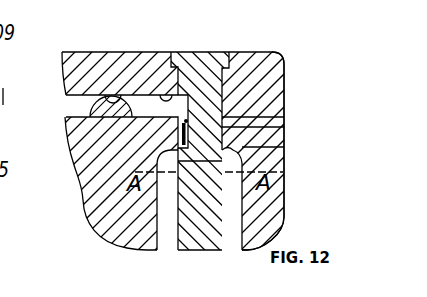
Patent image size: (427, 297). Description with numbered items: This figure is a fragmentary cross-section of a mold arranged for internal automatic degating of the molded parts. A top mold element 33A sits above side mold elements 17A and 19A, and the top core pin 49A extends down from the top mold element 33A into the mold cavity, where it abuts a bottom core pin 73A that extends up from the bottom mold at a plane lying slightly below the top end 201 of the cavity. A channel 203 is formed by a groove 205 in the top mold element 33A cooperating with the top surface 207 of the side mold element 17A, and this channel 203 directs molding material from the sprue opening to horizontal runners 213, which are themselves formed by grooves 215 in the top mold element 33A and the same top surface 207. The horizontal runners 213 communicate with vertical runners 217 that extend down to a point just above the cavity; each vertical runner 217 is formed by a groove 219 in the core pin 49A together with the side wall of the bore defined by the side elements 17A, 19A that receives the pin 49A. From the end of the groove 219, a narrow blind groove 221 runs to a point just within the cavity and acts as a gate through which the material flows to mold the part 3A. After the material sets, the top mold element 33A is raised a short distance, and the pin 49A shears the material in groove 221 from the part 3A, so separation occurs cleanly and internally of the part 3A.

The side mold element 17A is at (84, 216).
The top mold element 33A is at (107, 56).
The channel 203 is at (105, 101).
The top surface 207 is at (102, 113).
The groove 205 is at (126, 101).
The grooves 215 is at (181, 104).
The horizontal runners 213 is at (180, 107).
The core pin 49A is at (182, 108).
The groove 219 is at (284, 127).
The top end 201 is at (284, 147).
The narrow blind groove 221 is at (234, 152).
The part 3A is at (236, 216).
The side mold element 19A is at (284, 218).
The vertical runners 217 is at (176, 136).
The bottom core pin 73A is at (178, 251).